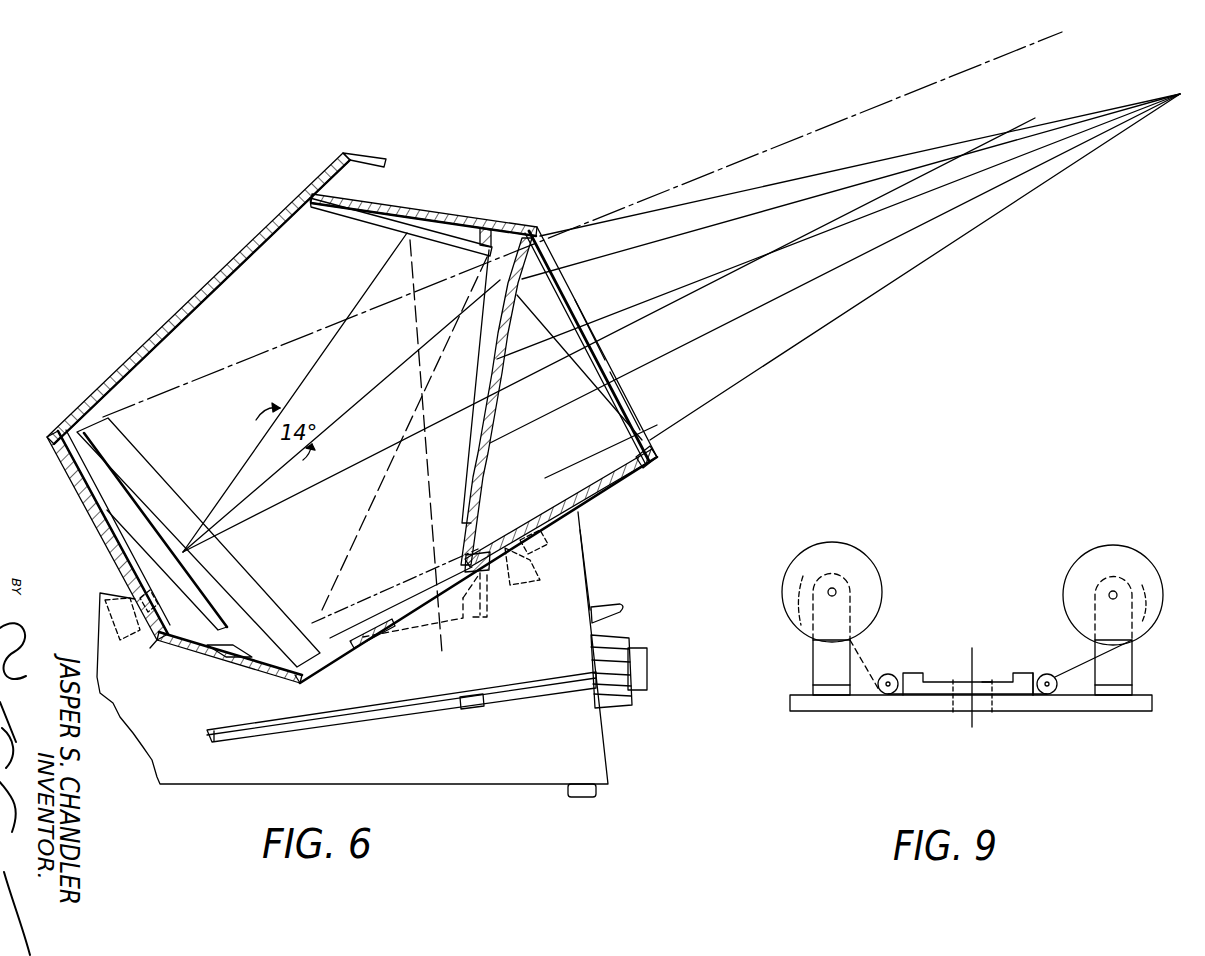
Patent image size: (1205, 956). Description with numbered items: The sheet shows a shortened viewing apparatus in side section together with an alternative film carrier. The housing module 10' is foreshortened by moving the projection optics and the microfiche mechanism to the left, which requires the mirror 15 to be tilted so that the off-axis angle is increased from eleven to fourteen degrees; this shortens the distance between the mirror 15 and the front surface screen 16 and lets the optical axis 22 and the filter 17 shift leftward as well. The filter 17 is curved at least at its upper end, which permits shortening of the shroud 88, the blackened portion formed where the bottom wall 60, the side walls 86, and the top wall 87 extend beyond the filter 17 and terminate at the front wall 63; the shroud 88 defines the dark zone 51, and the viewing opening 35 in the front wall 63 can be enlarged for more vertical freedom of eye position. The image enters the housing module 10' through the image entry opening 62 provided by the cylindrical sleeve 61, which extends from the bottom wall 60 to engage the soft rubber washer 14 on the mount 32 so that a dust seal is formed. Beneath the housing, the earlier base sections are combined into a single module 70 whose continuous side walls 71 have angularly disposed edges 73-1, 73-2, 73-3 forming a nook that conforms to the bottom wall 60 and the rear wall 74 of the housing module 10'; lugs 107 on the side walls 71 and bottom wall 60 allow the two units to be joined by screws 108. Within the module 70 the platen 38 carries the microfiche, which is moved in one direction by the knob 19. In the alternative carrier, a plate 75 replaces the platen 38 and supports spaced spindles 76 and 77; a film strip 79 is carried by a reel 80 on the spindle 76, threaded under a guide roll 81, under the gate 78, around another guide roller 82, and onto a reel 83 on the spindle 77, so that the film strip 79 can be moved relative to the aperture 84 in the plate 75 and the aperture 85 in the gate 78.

In FIG. 6, the housing module 10' is at (216, 372).
In FIG. 9, the soft rubber washer 14 is at (968, 658).
In FIG. 6, the mirror 15 is at (462, 250).
In FIG. 6, the front surface screen 16 is at (105, 490).
In FIG. 6, the filter 17 is at (487, 420).
In FIG. 6, the knob 19 is at (622, 640).
In FIG. 6, the optical axis 22 is at (318, 356).
In FIG. 6, the mount 32 is at (595, 600).
In FIG. 6, the viewing opening 35 is at (558, 255).
In FIG. 6, the platen 38 is at (450, 722).
In FIG. 6, the dark zone 51 is at (598, 501).
In FIG. 6, the bottom wall 60 is at (356, 648).
In FIG. 6, the cylindrical sleeve 61 is at (486, 603).
In FIG. 6, the image entry opening 62 is at (458, 626).
In FIG. 6, the front wall 63 is at (632, 402).
In FIG. 6, the module 70 is at (563, 565).
In FIG. 6, the side walls 71 is at (352, 654).
In FIG. 6, the edge 73-1 is at (325, 688).
In FIG. 6, the edge 73-2 is at (232, 668).
In FIG. 6, the edge 73-3 is at (150, 640).
In FIG. 6, the rear wall 74 is at (65, 480).
In FIG. 9, the plate 75 is at (888, 715).
In FIG. 9, the spindle 76 is at (838, 592).
In FIG. 9, the spindle 77 is at (1118, 591).
In FIG. 9, the gate 78 is at (995, 675).
In FIG. 9, the film strip 79 is at (1082, 698).
In FIG. 9, the reel 80 is at (848, 553).
In FIG. 9, the guide roll 81 is at (882, 674).
In FIG. 9, the guide roller 82 is at (1053, 673).
In FIG. 9, the reel 83 is at (1158, 600).
In FIG. 9, the aperture 84 is at (975, 710).
In FIG. 9, the aperture 85 is at (982, 678).
In FIG. 6, the side walls 86 is at (587, 386).
In FIG. 6, the top wall 87 is at (486, 226).
In FIG. 6, the shroud 88 is at (578, 372).
In FIG. 6, the lugs 107 is at (560, 530).
In FIG. 6, the screws 108 is at (535, 562).